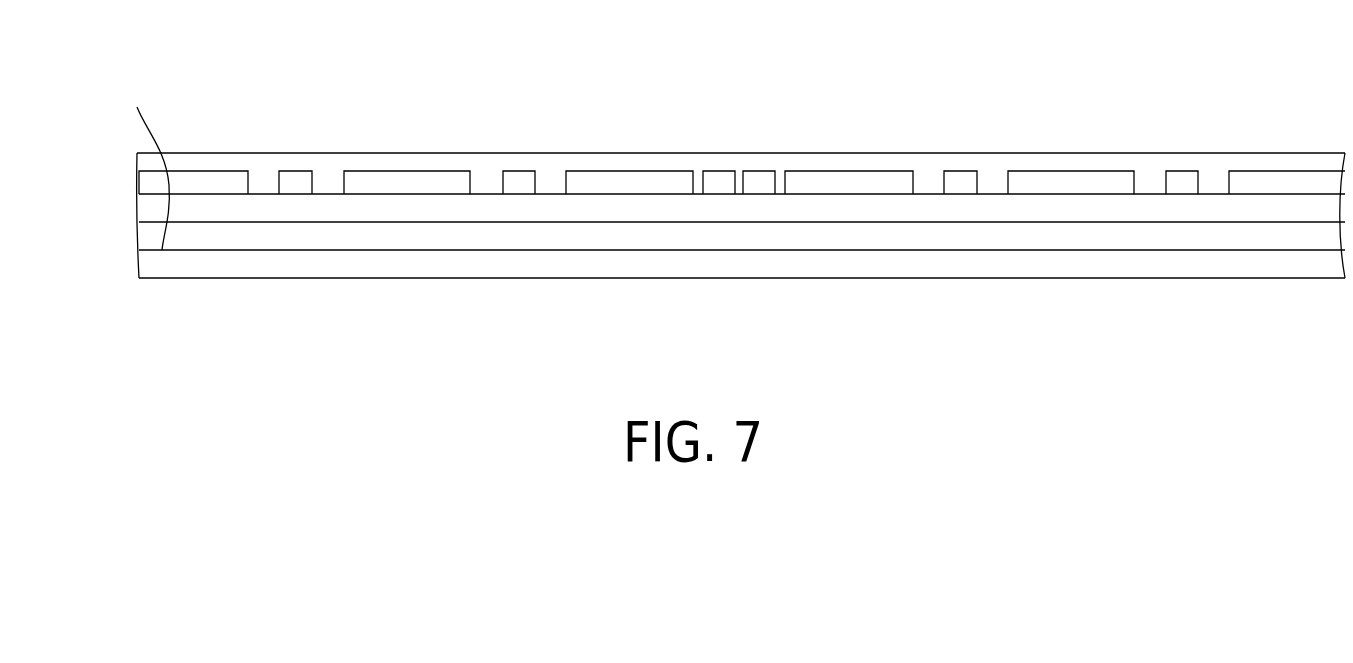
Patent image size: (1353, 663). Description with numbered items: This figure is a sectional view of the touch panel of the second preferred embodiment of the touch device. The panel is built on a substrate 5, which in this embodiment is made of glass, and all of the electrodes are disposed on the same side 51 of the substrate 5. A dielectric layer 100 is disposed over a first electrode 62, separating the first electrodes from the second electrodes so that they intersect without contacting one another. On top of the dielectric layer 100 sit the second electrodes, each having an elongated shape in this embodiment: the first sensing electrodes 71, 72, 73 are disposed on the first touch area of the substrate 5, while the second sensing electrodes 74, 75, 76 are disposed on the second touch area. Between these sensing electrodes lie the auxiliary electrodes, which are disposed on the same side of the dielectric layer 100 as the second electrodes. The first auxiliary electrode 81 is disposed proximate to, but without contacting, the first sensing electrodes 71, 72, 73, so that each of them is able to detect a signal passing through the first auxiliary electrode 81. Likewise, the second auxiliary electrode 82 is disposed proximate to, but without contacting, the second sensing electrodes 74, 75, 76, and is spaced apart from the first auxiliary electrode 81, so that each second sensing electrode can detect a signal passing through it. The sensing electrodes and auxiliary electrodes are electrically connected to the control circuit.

The substrate 5 is at (200, 292).
The side of the substrate 51 is at (144, 163).
The first electrode 62 is at (143, 238).
The first sensing electrode 71 is at (183, 177).
The first sensing electrode 72 is at (400, 177).
The first sensing electrode 73 is at (626, 177).
The second sensing electrode 74 is at (846, 177).
The second sensing electrode 75 is at (1065, 177).
The second sensing electrode 76 is at (1294, 177).
The first auxiliary electrode 81 is at (298, 177).
The second auxiliary electrode 82 is at (762, 177).
The dielectric layer 100 is at (143, 205).